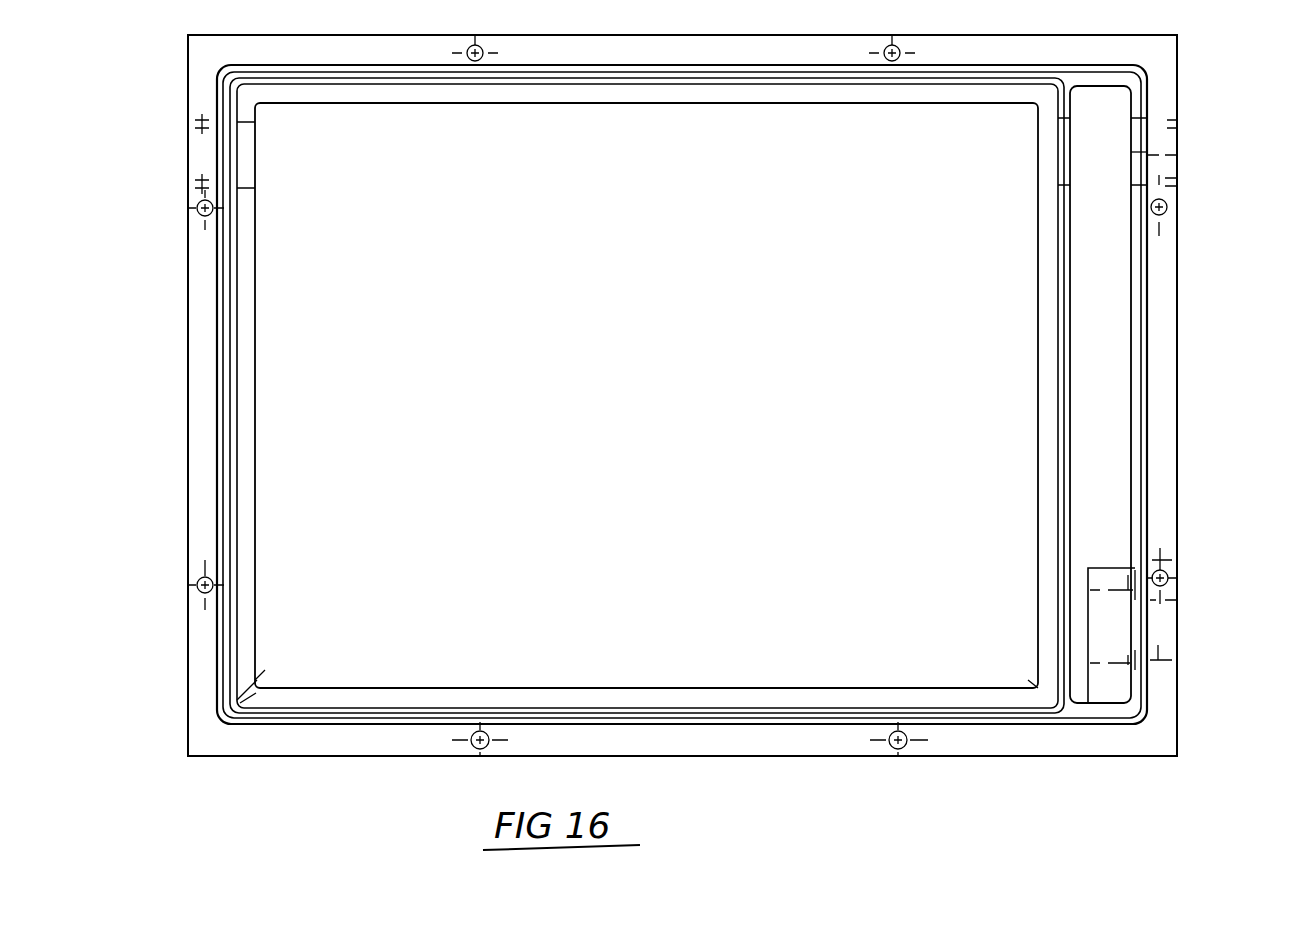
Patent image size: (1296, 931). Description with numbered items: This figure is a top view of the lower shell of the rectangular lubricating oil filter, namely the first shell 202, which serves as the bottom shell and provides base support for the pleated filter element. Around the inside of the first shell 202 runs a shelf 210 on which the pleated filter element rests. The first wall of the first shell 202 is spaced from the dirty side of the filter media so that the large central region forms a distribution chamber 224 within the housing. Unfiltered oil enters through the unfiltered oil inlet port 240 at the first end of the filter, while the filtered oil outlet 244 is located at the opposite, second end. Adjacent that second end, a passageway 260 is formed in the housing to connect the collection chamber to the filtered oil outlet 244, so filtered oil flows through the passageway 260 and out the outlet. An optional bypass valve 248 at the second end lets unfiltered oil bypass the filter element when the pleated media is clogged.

The first shell 202 is at (183, 408).
The shelf 210 is at (250, 452).
The distribution chamber 224 is at (663, 510).
The unfiltered oil inlet port 240 is at (213, 170).
The filtered oil outlet 244 is at (1147, 152).
The bypass valve 248 is at (1104, 628).
The passageway 260 is at (1108, 478).